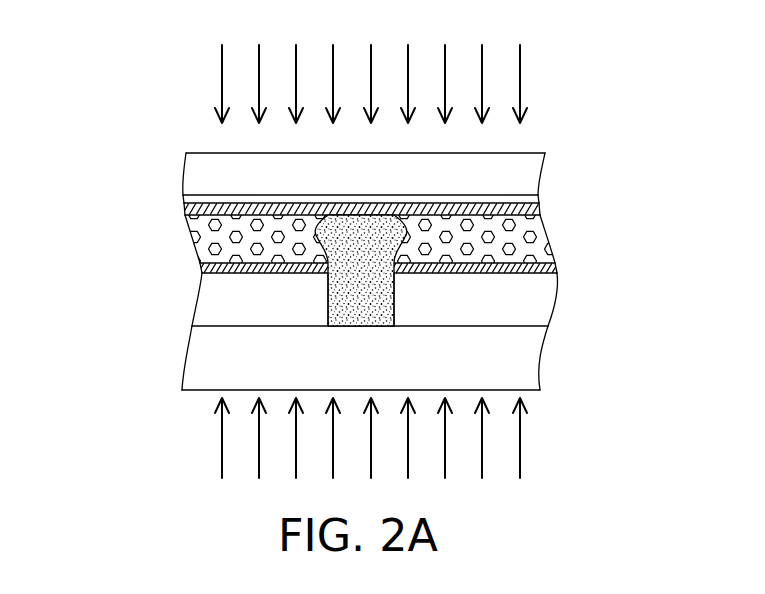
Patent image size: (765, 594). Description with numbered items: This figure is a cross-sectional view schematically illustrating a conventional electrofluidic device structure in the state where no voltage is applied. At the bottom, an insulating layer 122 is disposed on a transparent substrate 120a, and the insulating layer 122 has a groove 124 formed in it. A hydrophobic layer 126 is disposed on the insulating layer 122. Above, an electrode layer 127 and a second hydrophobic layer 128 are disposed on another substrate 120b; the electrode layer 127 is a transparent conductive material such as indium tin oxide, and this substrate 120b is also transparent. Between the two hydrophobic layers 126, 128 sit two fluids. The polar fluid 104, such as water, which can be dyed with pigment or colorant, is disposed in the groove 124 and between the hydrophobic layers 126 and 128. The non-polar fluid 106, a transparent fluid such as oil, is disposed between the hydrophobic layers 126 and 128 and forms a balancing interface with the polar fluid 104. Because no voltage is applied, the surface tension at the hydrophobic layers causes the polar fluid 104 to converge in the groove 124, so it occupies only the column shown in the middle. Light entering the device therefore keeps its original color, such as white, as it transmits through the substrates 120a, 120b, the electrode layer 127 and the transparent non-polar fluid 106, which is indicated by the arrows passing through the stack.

The polar fluid 104 is at (372, 223).
The non-polar fluid 106 is at (200, 246).
The transparent substrate 120a is at (190, 370).
The substrate 120b is at (195, 164).
The insulating layer 122 is at (197, 294).
The groove 124 is at (331, 303).
The hydrophobic layer 126 is at (205, 270).
The electrode layer 127 is at (196, 200).
The hydrophobic layer 128 is at (190, 209).